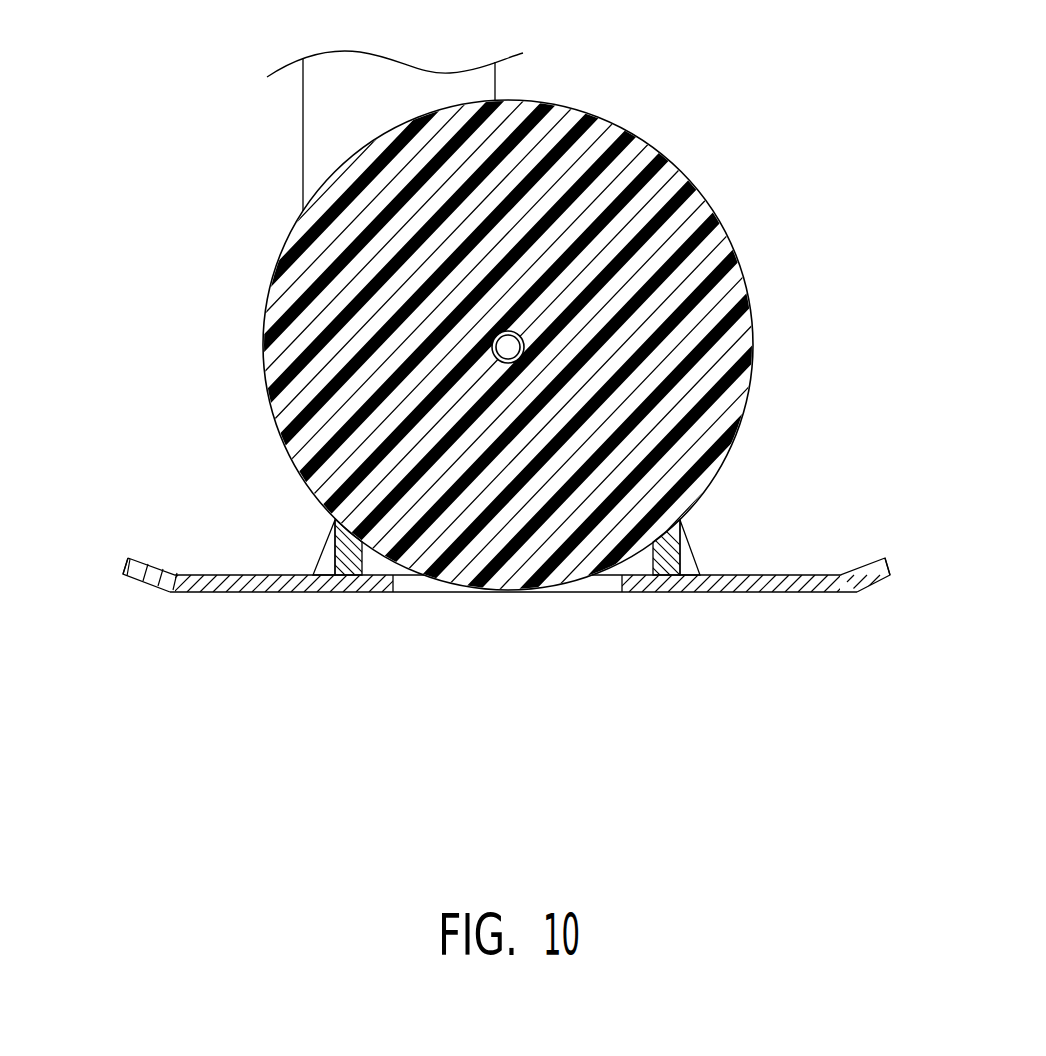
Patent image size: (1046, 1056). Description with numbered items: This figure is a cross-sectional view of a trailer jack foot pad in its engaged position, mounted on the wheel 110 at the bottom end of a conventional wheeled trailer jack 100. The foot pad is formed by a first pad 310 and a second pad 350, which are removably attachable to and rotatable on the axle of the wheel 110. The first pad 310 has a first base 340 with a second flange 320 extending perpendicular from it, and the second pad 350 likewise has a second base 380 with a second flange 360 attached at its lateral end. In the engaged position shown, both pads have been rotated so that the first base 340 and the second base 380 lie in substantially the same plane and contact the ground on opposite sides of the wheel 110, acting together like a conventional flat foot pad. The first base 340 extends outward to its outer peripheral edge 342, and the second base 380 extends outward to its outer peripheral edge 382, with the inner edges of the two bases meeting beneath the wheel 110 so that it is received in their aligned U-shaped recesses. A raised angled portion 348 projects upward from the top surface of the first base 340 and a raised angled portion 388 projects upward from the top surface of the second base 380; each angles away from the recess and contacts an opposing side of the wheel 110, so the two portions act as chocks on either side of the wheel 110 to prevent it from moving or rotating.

The wheeled trailer jack 100 is at (328, 112).
The wheel 110 is at (693, 228).
The first pad 310 is at (213, 555).
The second flange 320 is at (327, 562).
The first base 340 is at (273, 583).
The outer peripheral edge 342 is at (128, 560).
The raised angled portion 348 is at (345, 555).
The second pad 350 is at (790, 550).
The second flange 360 is at (688, 563).
The second base 380 is at (728, 587).
The outer peripheral edge 382 is at (888, 560).
The raised angled portion 388 is at (667, 563).